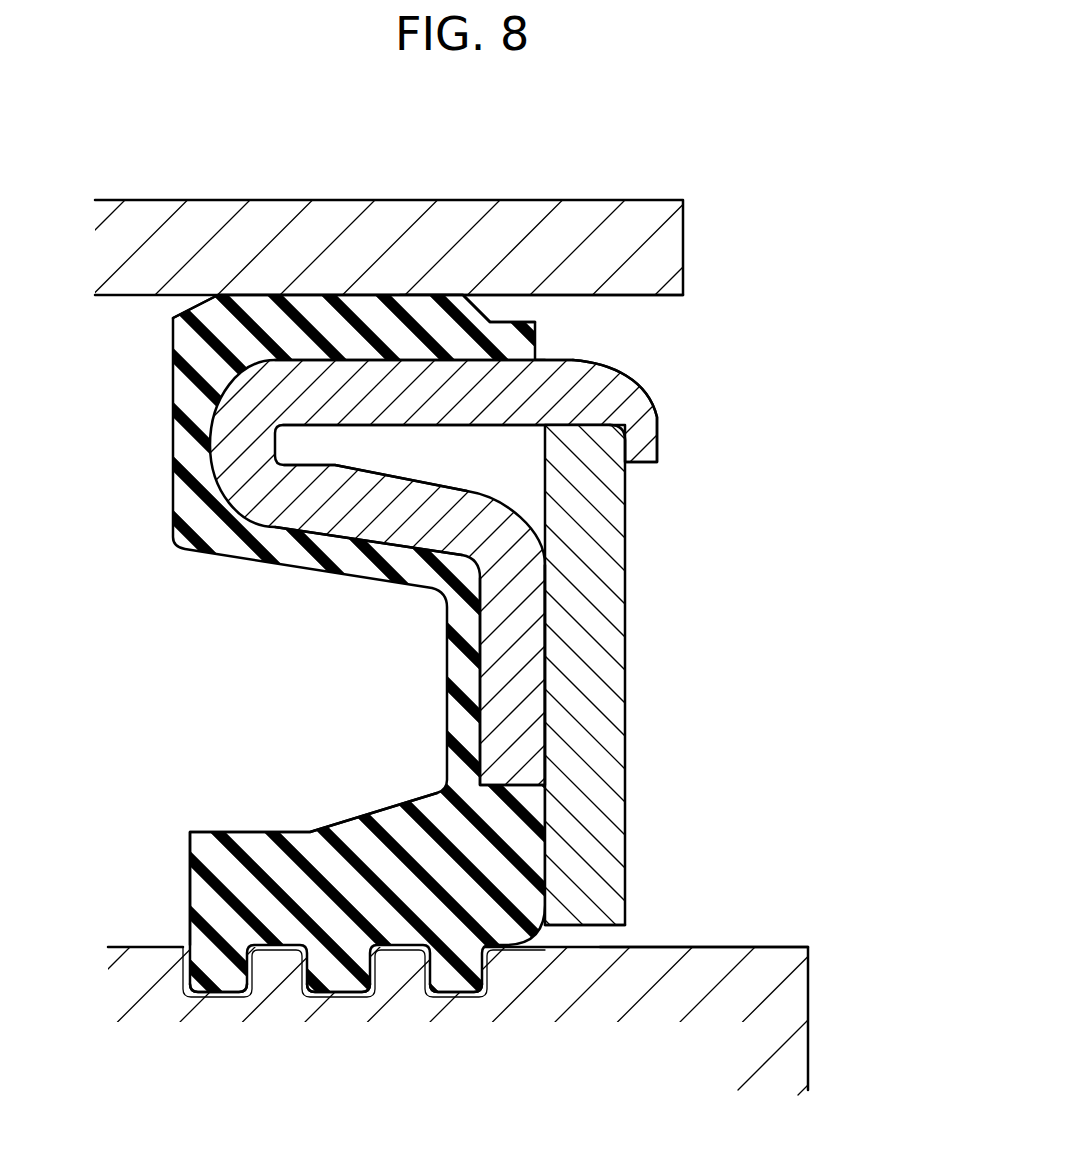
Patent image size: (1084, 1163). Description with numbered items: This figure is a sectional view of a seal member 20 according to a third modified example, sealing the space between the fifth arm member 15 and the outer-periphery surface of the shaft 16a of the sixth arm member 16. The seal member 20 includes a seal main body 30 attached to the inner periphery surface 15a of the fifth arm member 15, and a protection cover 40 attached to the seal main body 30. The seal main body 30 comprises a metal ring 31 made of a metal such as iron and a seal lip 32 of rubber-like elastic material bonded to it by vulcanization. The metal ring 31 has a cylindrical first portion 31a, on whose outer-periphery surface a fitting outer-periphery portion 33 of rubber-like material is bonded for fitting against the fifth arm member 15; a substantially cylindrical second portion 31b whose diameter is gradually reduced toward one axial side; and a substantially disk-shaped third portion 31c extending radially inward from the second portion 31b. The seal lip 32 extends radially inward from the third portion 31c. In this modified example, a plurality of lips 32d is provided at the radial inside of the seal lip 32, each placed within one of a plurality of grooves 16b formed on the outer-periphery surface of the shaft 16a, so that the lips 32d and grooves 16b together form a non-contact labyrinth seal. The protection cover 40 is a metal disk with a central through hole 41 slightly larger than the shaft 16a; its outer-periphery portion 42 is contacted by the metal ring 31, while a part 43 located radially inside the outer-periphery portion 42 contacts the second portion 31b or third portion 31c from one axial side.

The fifth arm member 15 is at (683, 252).
The inner periphery surface 15a is at (643, 295).
The sixth arm member 16 is at (809, 1005).
The shaft 16a is at (745, 947).
The grooves 16b is at (470, 980).
The seal member 20 is at (755, 447).
The seal main body 30 is at (173, 372).
The metal ring 31 is at (342, 466).
The first portion 31a is at (418, 387).
The second portion 31b is at (325, 518).
The third portion 31c is at (500, 657).
The seal lip 32 is at (252, 832).
The lips 32d is at (450, 972).
The fitting outer-periphery portion 33 is at (262, 312).
The protection cover 40 is at (626, 497).
The through hole 41 is at (600, 927).
The outer-periphery portion 42 is at (607, 440).
The part 43 is at (553, 667).